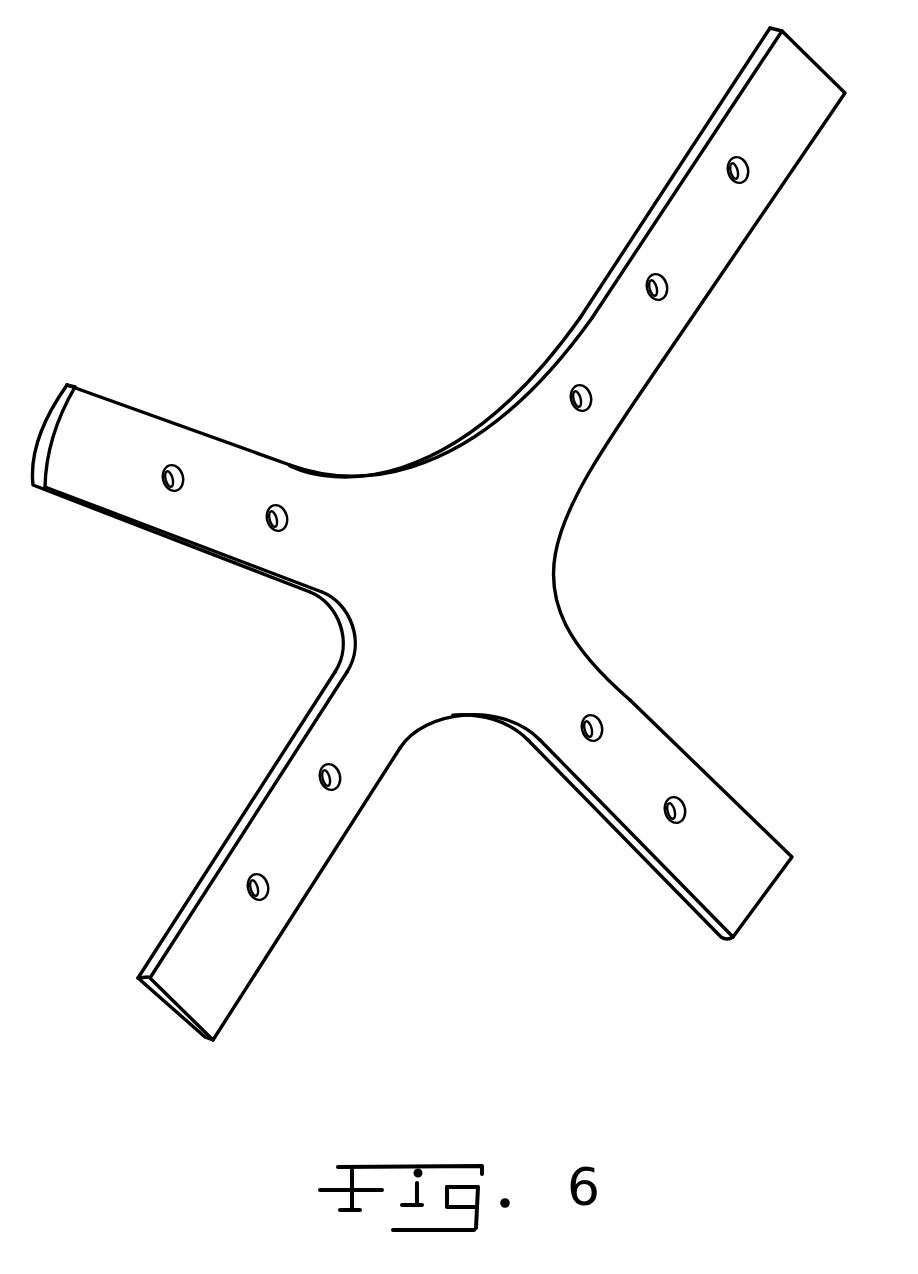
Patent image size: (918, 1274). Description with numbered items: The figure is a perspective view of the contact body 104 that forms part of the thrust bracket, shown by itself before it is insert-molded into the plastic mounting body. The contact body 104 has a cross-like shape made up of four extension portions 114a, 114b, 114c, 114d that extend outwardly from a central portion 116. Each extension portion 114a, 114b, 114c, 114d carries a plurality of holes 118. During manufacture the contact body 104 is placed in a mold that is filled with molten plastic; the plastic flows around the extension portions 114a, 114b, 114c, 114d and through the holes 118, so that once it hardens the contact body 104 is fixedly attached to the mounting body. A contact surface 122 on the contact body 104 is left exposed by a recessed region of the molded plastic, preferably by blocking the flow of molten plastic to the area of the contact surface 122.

The contact body 104 is at (445, 534).
The extension portion 114a is at (657, 870).
The extension portion 114b is at (270, 960).
The extension portion 114c is at (193, 430).
The extension portion 114d is at (727, 268).
The central portion 116 is at (426, 532).
The holes 118 is at (585, 392).
The contact surface 122 is at (463, 598).